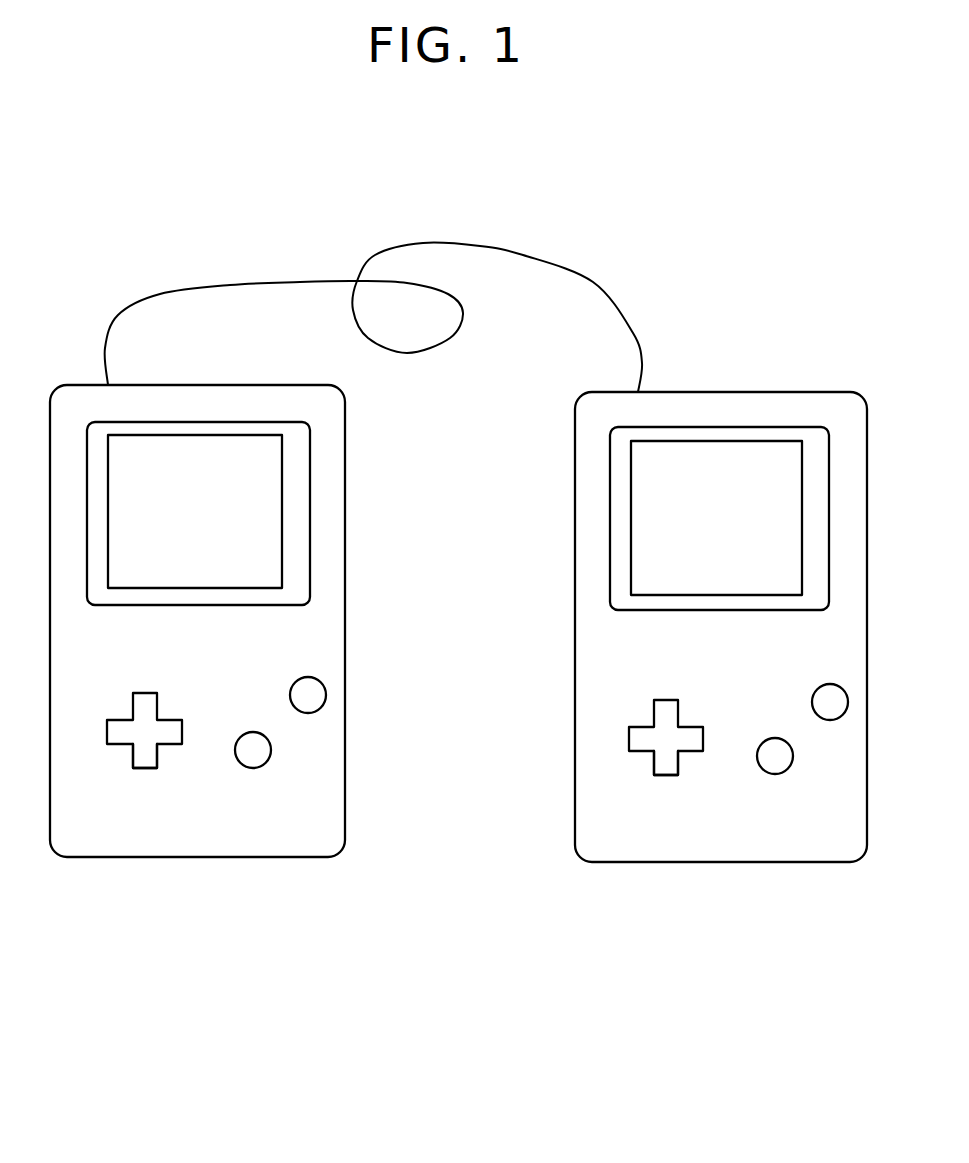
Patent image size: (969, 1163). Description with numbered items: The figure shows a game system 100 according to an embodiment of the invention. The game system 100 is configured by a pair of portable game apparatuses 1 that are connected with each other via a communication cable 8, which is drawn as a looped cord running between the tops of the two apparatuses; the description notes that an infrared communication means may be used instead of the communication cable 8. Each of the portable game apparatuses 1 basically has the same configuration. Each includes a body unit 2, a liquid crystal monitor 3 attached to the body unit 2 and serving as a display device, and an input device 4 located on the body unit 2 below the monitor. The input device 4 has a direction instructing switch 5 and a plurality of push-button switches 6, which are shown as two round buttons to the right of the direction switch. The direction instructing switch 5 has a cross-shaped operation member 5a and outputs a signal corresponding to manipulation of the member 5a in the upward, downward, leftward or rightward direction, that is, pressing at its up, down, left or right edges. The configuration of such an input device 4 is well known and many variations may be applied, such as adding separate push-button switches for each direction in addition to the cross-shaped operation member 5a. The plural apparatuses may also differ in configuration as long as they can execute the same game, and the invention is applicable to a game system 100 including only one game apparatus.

The game system 100 is at (677, 246).
The portable game apparatus 1 is at (352, 541).
The body unit 2 is at (285, 393).
The liquid crystal monitor 3 is at (200, 437).
The input device 4 is at (163, 912).
The direction instructing switch 5 is at (157, 772).
The cross-shaped operation member 5a is at (138, 755).
The push-button switches 6 is at (308, 700).
The communication cable 8 is at (610, 292).